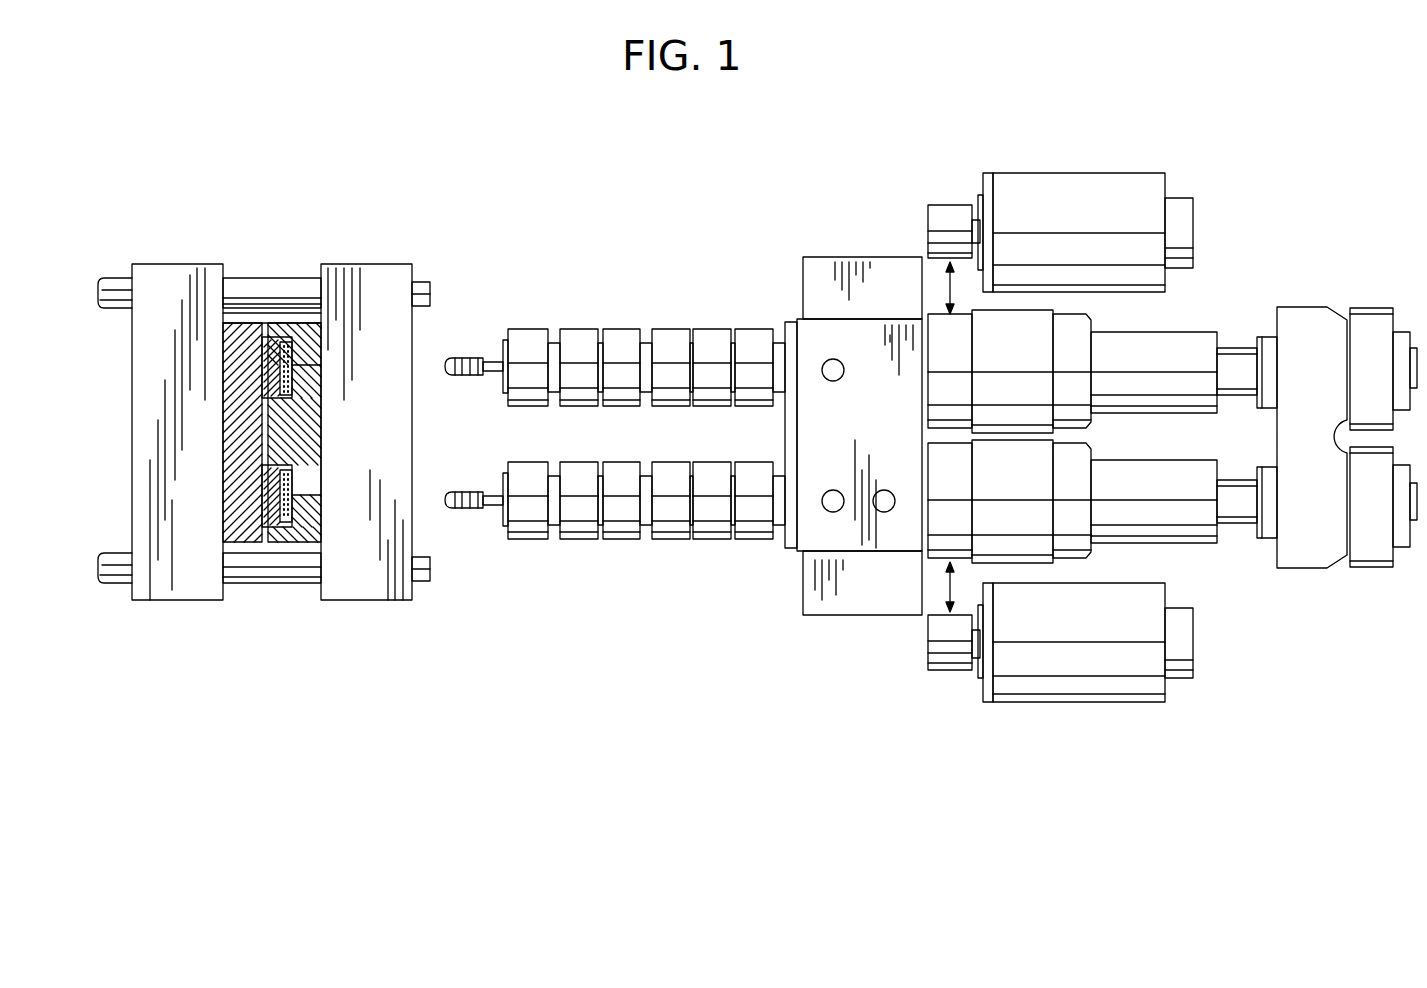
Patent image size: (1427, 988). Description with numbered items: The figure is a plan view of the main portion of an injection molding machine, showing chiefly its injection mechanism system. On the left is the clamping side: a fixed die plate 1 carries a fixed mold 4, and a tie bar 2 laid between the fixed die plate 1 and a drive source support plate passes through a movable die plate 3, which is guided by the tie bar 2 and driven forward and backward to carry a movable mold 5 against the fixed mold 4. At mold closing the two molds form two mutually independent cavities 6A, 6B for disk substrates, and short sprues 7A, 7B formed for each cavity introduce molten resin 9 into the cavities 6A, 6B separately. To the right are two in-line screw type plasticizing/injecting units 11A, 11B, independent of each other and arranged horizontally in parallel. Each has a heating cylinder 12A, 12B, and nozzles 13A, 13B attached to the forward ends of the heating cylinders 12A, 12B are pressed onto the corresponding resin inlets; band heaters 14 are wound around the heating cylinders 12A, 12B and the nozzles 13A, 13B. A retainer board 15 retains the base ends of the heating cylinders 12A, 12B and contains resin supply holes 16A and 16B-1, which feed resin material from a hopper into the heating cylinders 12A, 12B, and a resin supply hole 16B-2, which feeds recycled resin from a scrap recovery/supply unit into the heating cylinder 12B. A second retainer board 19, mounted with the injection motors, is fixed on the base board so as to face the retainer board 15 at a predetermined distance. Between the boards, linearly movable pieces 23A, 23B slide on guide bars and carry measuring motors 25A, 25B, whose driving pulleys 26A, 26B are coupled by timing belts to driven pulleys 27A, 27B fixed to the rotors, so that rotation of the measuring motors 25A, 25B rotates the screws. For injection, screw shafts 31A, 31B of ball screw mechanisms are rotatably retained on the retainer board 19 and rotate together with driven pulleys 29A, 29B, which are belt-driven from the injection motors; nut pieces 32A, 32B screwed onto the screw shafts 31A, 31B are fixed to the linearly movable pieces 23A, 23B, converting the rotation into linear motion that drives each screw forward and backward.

The fixed die plate 1 is at (380, 264).
The tie bar 2 is at (112, 278).
The movable die plate 3 is at (167, 264).
The fixed mold 4 is at (300, 323).
The movable mold 5 is at (245, 323).
The cavity 6A is at (283, 340).
The cavity 6B is at (282, 528).
The sprue 7A is at (300, 366).
The sprue 7B is at (300, 490).
The resin 9 is at (281, 378).
The plasticizing/injecting unit 11A is at (686, 312).
The plasticizing/injecting unit 11B is at (687, 546).
The heating cylinder 12A is at (643, 329).
The heating cylinder 12B is at (625, 542).
The nozzle 13A is at (447, 378).
The nozzle 13B is at (463, 510).
The band heater 14 is at (532, 329).
The retainer board 15 is at (862, 257).
The resin supply hole 16A is at (830, 359).
The resin supply hole 16B-1 is at (830, 512).
The resin supply hole 16B-2 is at (886, 512).
The retainer board 19 is at (1333, 568).
The linearly movable piece 23A is at (1028, 318).
The linearly movable piece 23B is at (1040, 565).
The measuring motor 25A is at (1068, 173).
The measuring motor 25B is at (1070, 702).
The driving pulley 26A is at (952, 205).
The driving pulley 26B is at (965, 672).
The driven pulley 27A is at (930, 322).
The driven pulley 27B is at (940, 548).
The driven pulley 29A is at (1375, 308).
The driven pulley 29B is at (1370, 567).
The screw shaft 31A is at (1262, 337).
The screw shaft 31B is at (1262, 540).
The nut piece 32A is at (1190, 332).
The nut piece 32B is at (1190, 545).